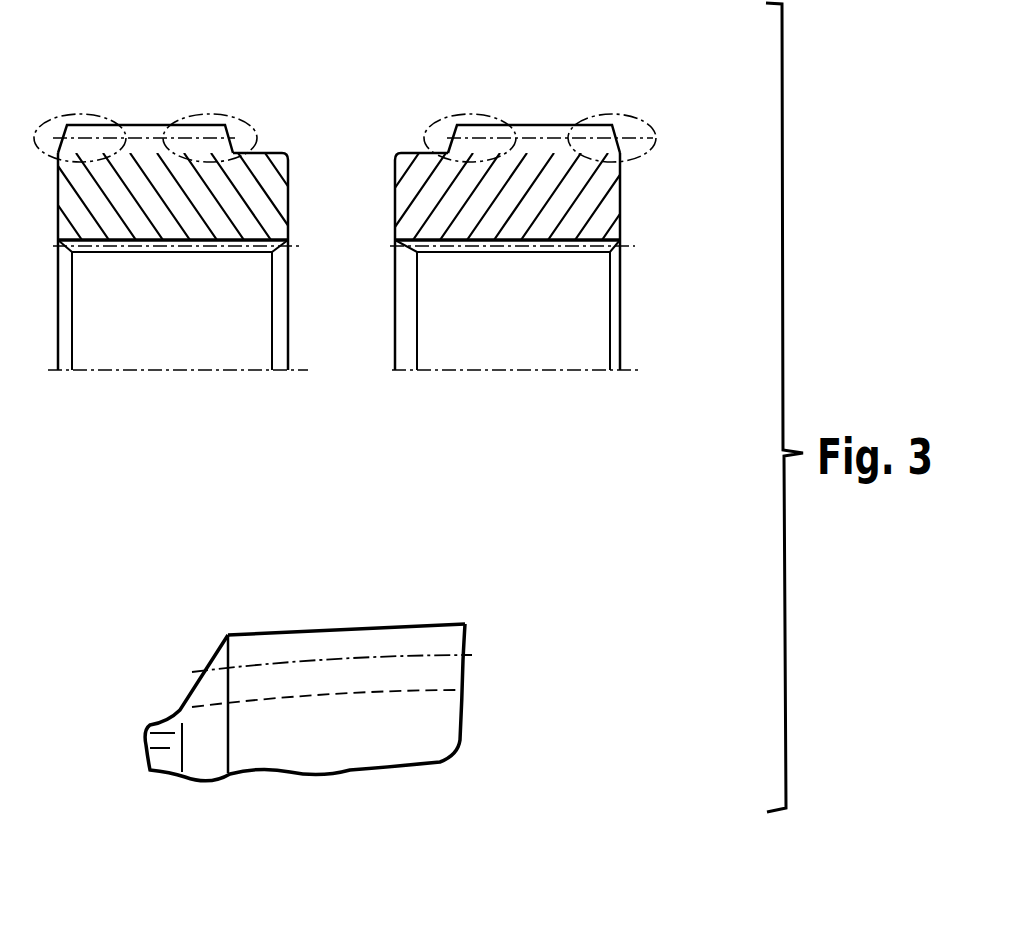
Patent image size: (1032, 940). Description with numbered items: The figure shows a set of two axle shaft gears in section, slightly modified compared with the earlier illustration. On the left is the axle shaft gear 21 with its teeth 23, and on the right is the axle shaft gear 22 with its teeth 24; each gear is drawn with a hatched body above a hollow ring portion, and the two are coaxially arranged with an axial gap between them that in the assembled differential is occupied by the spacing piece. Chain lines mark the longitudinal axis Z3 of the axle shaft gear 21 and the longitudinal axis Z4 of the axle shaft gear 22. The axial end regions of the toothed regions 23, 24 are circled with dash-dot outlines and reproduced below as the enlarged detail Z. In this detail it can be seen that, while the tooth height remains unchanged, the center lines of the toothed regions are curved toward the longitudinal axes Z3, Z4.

The axle shaft gear 21 is at (168, 213).
The axle shaft gear 22 is at (520, 215).
The teeth 23 is at (143, 127).
The teeth 24 is at (540, 127).
The enlarged detail Z is at (90, 115).
The longitudinal axis Z3 is at (262, 372).
The longitudinal axis Z4 is at (600, 372).